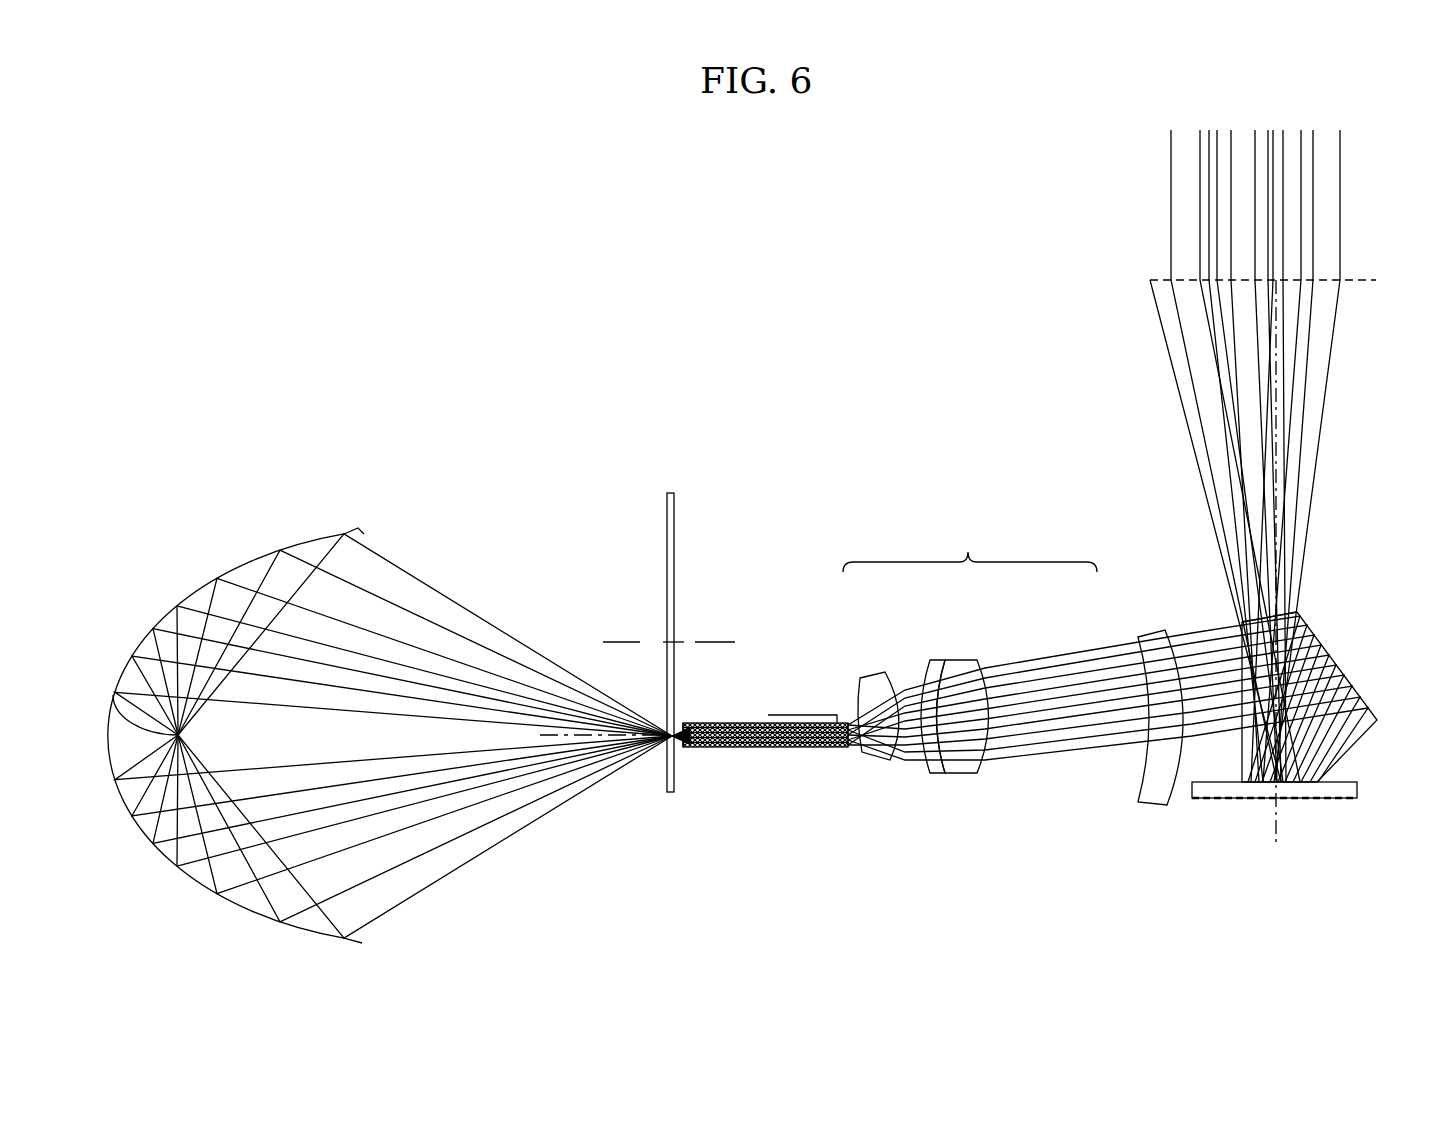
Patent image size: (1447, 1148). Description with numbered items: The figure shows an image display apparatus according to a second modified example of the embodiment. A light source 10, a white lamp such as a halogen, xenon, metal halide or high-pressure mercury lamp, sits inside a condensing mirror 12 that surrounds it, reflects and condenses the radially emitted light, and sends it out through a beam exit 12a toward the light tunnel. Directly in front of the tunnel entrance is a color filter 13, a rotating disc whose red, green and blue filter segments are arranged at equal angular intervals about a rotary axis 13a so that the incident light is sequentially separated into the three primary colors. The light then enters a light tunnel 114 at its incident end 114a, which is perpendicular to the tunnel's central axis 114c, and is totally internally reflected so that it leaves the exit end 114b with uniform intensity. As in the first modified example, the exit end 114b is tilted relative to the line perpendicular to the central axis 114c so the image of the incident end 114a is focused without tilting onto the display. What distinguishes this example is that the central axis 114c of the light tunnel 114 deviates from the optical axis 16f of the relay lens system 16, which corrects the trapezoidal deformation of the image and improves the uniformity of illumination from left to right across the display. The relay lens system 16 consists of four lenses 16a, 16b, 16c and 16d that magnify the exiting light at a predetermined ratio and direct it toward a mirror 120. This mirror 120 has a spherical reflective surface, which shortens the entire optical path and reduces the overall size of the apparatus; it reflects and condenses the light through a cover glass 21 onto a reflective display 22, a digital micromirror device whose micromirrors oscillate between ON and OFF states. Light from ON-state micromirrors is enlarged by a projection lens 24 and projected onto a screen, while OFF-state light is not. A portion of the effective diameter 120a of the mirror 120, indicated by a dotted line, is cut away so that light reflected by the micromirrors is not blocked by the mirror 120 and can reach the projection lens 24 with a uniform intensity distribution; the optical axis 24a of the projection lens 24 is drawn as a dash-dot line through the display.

The light source 10 is at (110, 703).
The condensing mirror 12 is at (232, 900).
The beam exit 12a is at (364, 534).
The color filter 13 is at (675, 537).
The rotary axis 13a is at (644, 640).
The light tunnel 114 is at (778, 757).
The incident end 114a is at (684, 745).
The exit end 114b is at (848, 748).
The central axis 114c is at (548, 733).
The relay lens system 16 is at (983, 544).
The lens 16a is at (892, 682).
The lens 16b is at (935, 670).
The lens 16c is at (973, 670).
The lens 16d is at (1145, 638).
The optical axis 16f is at (823, 712).
The mirror 120 is at (1366, 710).
The effective diameter 120a is at (1297, 611).
The cover glass 21 is at (1353, 788).
The reflective display 22 is at (1340, 815).
The projection lens 24 is at (1361, 279).
The projection lens optical axis 24a is at (1275, 837).